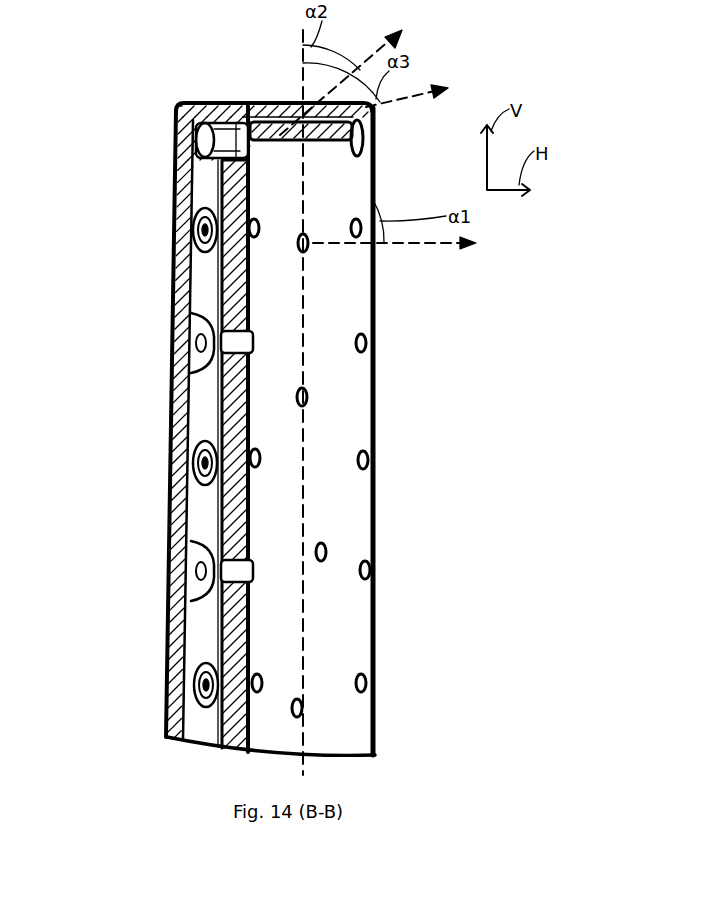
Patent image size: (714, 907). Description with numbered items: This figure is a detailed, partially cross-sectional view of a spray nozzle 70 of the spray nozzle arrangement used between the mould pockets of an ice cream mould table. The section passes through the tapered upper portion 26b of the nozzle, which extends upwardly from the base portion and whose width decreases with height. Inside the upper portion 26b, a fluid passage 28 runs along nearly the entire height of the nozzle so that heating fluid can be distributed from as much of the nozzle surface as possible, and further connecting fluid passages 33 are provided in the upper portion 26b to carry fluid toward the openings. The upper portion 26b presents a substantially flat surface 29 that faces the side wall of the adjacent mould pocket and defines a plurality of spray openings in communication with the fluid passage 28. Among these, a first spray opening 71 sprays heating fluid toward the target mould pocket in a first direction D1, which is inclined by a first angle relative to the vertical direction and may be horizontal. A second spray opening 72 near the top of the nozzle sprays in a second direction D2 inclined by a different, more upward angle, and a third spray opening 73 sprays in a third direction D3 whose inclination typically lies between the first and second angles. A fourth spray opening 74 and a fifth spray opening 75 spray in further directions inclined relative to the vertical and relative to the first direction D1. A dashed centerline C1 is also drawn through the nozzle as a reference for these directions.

The spray nozzle 70 is at (140, 90).
The second spray opening 72 is at (272, 118).
The third spray opening 73 is at (238, 149).
The fourth spray opening 74 is at (232, 228).
The surface 29 is at (328, 195).
The fifth spray opening 75 is at (363, 247).
The first spray opening 71 is at (306, 252).
The upper portion 26b is at (175, 278).
The connecting fluid passages 33 is at (200, 356).
The fluid passage 28 is at (203, 400).
The axis C1 is at (301, 70).
The first direction D1 is at (418, 248).
The second direction D2 is at (358, 60).
The third direction D3 is at (424, 86).